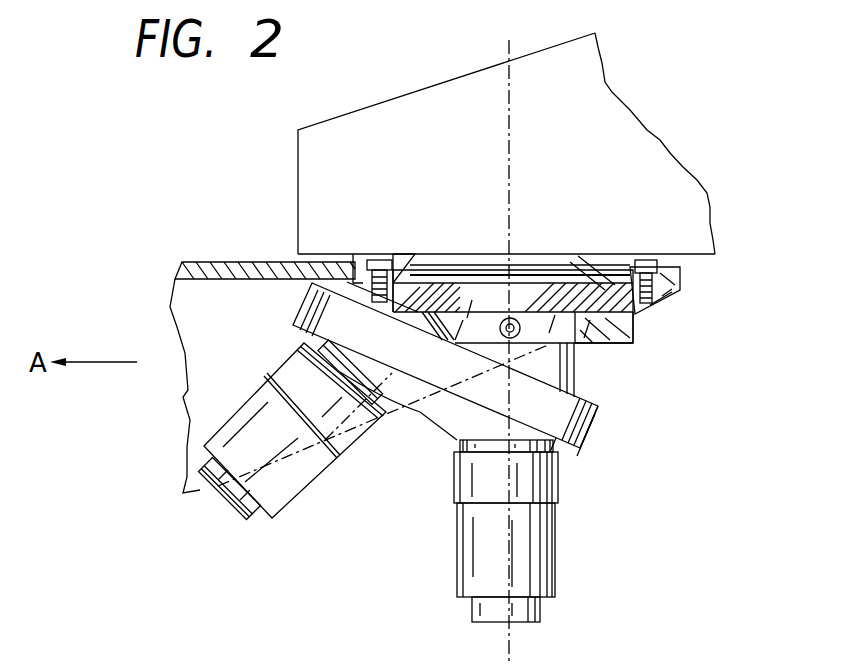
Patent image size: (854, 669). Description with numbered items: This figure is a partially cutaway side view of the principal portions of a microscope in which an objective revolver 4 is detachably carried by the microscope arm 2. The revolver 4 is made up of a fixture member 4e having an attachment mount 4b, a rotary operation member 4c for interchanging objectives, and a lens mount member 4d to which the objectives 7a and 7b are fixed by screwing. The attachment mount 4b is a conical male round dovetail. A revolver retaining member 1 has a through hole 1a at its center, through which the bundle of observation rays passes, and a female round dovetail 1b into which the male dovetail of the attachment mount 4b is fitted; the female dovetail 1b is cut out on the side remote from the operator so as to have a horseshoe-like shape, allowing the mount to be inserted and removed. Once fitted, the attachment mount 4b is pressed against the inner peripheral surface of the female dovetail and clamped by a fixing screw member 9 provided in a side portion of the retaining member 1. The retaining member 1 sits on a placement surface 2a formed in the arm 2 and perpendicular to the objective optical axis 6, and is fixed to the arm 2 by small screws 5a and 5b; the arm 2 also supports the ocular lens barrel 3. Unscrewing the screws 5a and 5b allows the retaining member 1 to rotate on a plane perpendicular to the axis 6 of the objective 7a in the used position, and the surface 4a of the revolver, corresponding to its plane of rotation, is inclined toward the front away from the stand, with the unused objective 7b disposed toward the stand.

The revolver retaining member 1 is at (636, 307).
The through hole 1a is at (553, 270).
The female round dovetail 1b is at (594, 270).
The arm 2 is at (217, 262).
The placement surface 2a is at (683, 281).
The ocular lens barrel 3 is at (640, 190).
The objective revolver 4 is at (454, 388).
The surface of the revolver 4a is at (590, 400).
The attachment mount 4b is at (570, 350).
The rotary operation member 4c is at (594, 466).
The lens mount member 4d is at (398, 438).
The fixture member 4e is at (575, 372).
The small screw 5a is at (650, 256).
The small screw 5b is at (376, 256).
The objective optical axis 6 is at (511, 638).
The objective 7a is at (538, 531).
The objective 7b is at (296, 452).
The fixing screw member 9 is at (492, 268).